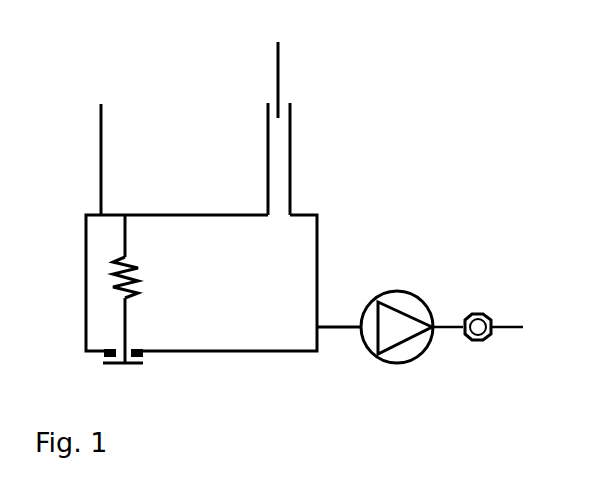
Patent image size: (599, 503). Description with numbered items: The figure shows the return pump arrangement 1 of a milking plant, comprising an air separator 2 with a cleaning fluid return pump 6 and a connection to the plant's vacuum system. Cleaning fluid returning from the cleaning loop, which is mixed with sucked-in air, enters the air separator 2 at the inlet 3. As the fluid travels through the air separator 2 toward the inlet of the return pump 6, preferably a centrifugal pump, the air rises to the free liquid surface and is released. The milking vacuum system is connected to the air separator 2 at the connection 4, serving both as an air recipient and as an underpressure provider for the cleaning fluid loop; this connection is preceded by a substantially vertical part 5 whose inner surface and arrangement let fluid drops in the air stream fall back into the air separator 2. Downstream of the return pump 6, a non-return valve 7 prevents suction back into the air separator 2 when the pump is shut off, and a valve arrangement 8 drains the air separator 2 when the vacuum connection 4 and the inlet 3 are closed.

The return pump arrangement 1 is at (465, 85).
The air separator 2 is at (241, 298).
The cleaning fluid inlet of the air separator 3 is at (111, 149).
The vacuum system connection 4 is at (287, 71).
The substantially vertical part 5 is at (280, 153).
The return pump 6 is at (413, 305).
The non-return valve 7 is at (465, 338).
The valve arrangement 8 is at (133, 371).